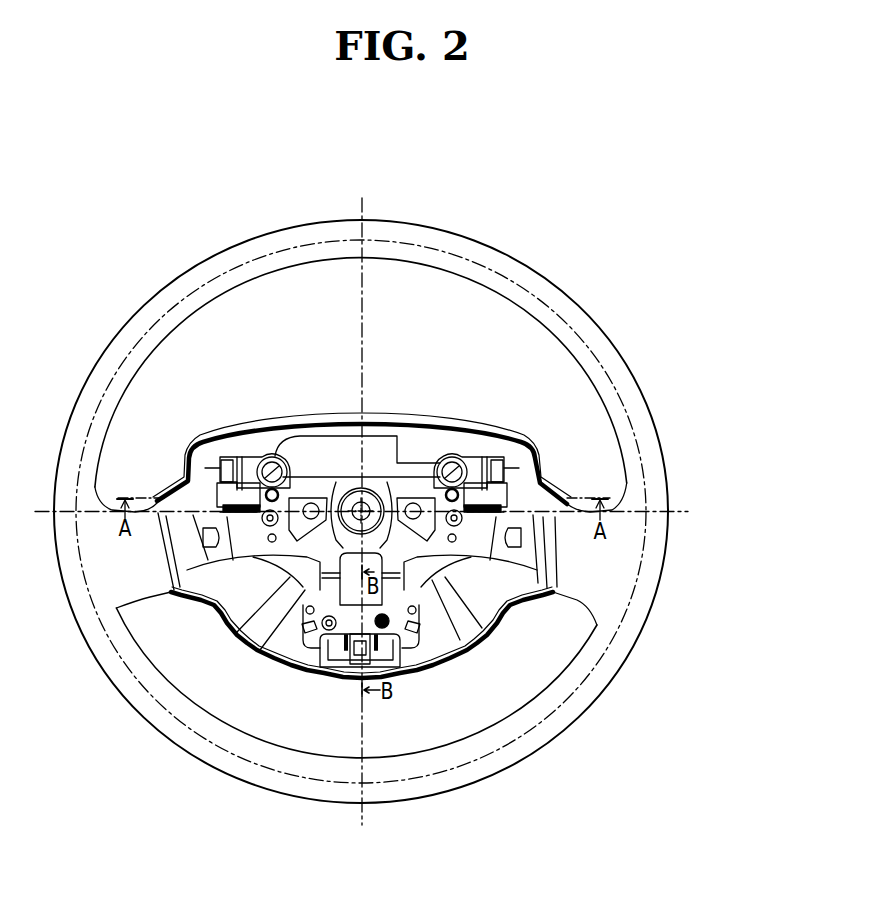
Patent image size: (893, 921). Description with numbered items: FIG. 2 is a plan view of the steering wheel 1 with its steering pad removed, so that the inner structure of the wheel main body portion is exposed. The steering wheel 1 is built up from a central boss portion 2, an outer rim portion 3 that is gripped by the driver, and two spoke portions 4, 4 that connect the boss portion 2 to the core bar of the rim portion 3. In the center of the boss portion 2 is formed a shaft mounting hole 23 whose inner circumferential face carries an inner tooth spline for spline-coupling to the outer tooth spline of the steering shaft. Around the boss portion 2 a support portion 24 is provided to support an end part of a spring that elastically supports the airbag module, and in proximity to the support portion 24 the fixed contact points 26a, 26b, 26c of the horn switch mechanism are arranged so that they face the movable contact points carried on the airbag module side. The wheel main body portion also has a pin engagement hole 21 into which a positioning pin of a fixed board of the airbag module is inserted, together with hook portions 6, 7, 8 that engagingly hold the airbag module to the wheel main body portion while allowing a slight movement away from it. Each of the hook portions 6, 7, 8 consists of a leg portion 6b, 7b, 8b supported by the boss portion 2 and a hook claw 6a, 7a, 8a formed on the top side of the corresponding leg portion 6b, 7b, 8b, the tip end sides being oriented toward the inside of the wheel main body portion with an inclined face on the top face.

The steering wheel 1 is at (675, 298).
The boss portion 2 is at (366, 489).
The rim portion 3 is at (543, 290).
The spoke portion 4 is at (212, 550).
The hook portion 6 is at (231, 434).
The hook claw 6a is at (232, 460).
The leg portion 6b is at (253, 472).
The hook portion 7 is at (498, 436).
The hook claw 7a is at (500, 487).
The leg portion 7b is at (485, 475).
The hook portion 8 is at (357, 694).
The hook claw 8a is at (357, 660).
The leg portion 8b is at (310, 634).
The pin engagement hole 21 is at (273, 457).
The shaft mounting hole 23 is at (341, 483).
The support portion 24 is at (262, 555).
The fixed contact point 26a is at (283, 470).
The fixed contact point 26b is at (446, 487).
The fixed contact point 26c is at (389, 628).